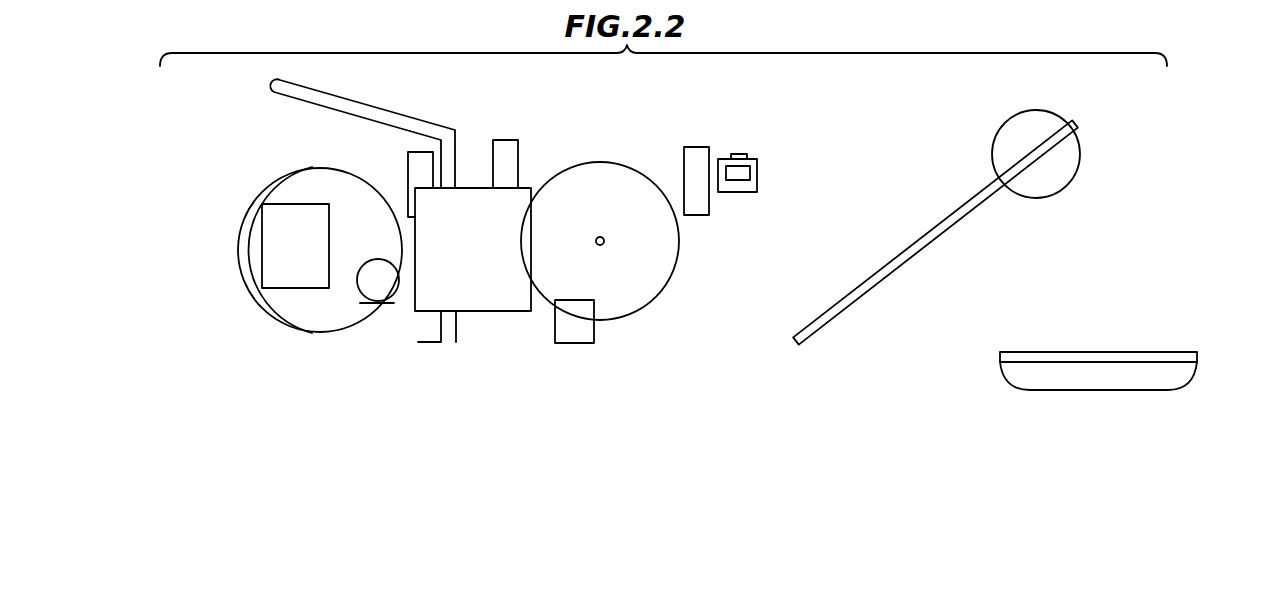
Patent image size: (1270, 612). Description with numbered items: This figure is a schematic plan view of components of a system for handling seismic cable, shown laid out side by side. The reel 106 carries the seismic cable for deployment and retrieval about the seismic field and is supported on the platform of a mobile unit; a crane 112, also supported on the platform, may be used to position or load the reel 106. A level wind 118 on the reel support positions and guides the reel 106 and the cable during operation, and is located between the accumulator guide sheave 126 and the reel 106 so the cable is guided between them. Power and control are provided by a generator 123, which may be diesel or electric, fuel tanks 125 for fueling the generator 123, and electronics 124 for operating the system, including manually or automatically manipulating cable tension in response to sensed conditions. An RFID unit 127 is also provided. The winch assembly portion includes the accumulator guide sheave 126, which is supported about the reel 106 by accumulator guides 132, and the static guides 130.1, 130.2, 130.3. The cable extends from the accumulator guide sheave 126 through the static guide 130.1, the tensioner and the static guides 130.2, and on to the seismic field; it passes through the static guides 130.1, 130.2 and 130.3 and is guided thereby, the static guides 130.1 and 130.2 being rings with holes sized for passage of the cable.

The reel 106 is at (652, 273).
The crane 112 is at (287, 95).
The level wind 118 is at (407, 165).
The generator 123 is at (292, 248).
The electronics 124 is at (490, 300).
The fuel tanks 125 is at (594, 333).
The accumulator guide sheave 126 is at (1060, 178).
The RFID unit 127 is at (757, 176).
The static guide 130.1 is at (497, 140).
The static guide 130.2 is at (1128, 351).
The static guide 130.3 is at (692, 147).
The accumulator guides 132 is at (943, 233).